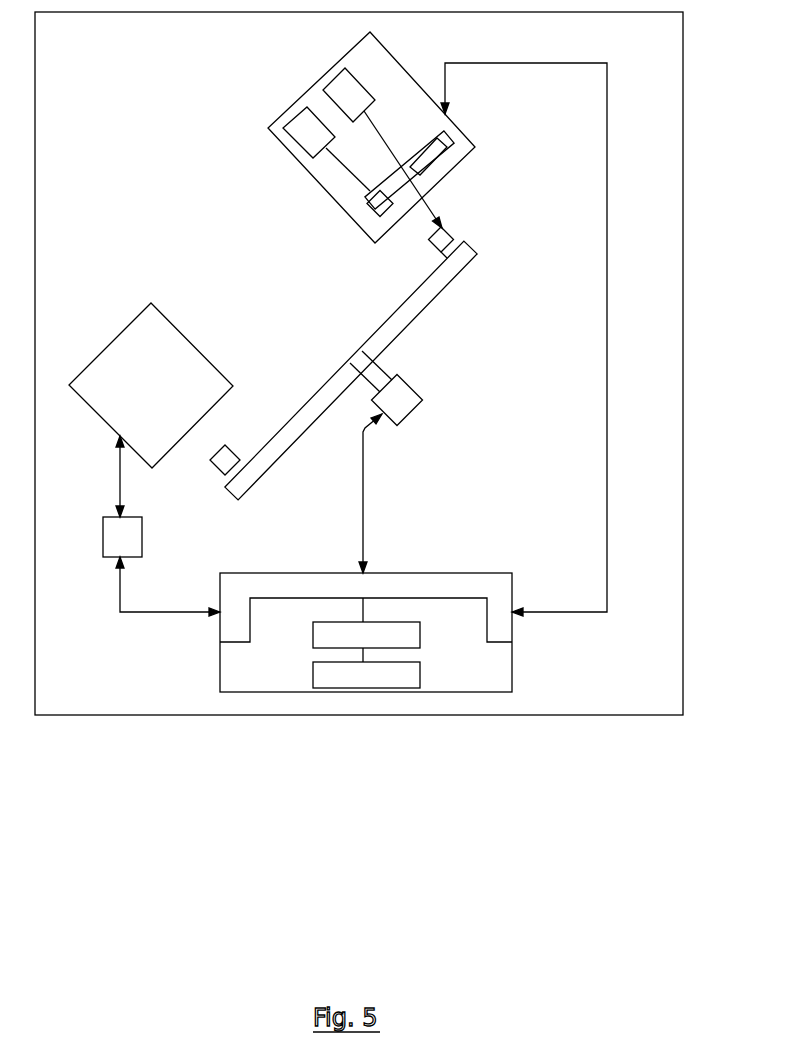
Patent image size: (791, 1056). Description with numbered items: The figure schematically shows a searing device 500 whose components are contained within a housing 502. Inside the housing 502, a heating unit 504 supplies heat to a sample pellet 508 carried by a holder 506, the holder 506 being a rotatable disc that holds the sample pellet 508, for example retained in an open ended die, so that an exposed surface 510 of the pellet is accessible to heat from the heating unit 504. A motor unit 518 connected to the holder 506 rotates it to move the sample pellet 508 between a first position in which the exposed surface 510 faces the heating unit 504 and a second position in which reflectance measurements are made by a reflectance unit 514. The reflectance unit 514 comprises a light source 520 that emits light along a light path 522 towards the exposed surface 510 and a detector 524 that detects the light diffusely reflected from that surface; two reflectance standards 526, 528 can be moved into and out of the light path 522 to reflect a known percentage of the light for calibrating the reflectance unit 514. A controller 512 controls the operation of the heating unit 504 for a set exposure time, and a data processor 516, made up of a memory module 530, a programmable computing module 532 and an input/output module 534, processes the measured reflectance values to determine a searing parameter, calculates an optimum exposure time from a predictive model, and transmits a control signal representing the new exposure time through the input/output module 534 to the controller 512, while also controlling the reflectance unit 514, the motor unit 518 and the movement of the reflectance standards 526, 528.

The searing device 500 is at (122, 806).
The housing 502 is at (605, 715).
The heating unit 504 is at (167, 392).
The holder 506 is at (443, 287).
The sample pellet 508 is at (446, 228).
The exposed surface 510 is at (214, 456).
The controller 512 is at (103, 536).
The reflectance unit 514 is at (403, 60).
The data processor 516 is at (220, 677).
The motor unit 518 is at (423, 398).
The light source 520 is at (267, 129).
The light path 522 is at (346, 166).
The detector 524 is at (318, 62).
The reflectance standard 526 is at (438, 134).
The reflectance standard 528 is at (371, 198).
The memory module 530 is at (420, 675).
The programmable computing module 532 is at (420, 630).
The input/output module 534 is at (433, 582).